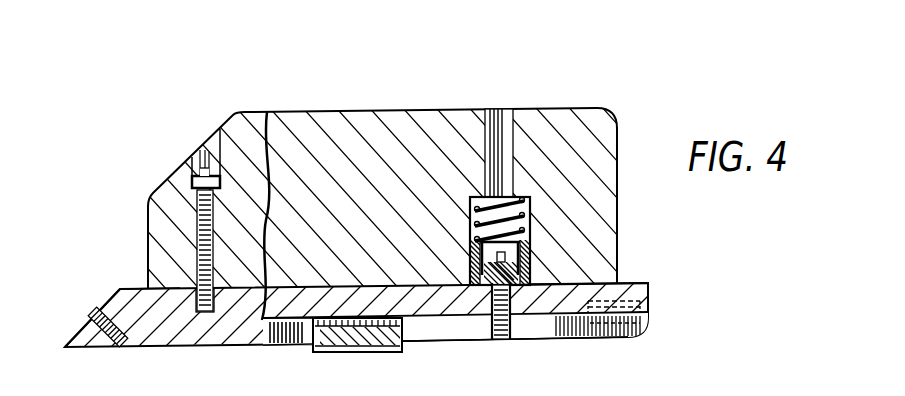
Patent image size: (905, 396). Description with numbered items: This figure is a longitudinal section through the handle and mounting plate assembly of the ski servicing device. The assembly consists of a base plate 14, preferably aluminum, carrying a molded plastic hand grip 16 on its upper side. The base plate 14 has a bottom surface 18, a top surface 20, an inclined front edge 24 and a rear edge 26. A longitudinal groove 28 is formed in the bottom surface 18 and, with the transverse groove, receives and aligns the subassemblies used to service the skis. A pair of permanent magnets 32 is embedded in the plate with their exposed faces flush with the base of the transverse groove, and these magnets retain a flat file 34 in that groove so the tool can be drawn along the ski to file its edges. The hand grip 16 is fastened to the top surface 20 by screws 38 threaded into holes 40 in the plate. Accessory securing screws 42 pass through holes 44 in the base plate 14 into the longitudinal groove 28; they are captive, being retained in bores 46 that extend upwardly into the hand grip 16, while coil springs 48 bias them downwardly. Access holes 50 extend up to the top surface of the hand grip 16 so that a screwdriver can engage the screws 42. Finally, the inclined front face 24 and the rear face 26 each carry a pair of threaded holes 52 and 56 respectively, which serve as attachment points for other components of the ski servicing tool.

The base plate 14 is at (558, 342).
The hand grip 16 is at (632, 194).
The bottom surface 18 is at (197, 336).
The top surface 20 is at (138, 288).
The inclined front edge 24 is at (112, 306).
The rear edge 26 is at (650, 286).
The longitudinal groove 28 is at (642, 328).
The permanent magnets 32 is at (313, 346).
The flat file 34 is at (402, 352).
The screws 38 is at (213, 200).
The holes 40 is at (197, 307).
The accessory securing screws 42 is at (530, 260).
The holes 44 is at (480, 316).
The bores 46 is at (530, 228).
The coil springs 48 is at (532, 204).
The access holes 50 is at (202, 162).
The threaded holes 52 is at (94, 320).
The threaded holes 56 is at (650, 305).